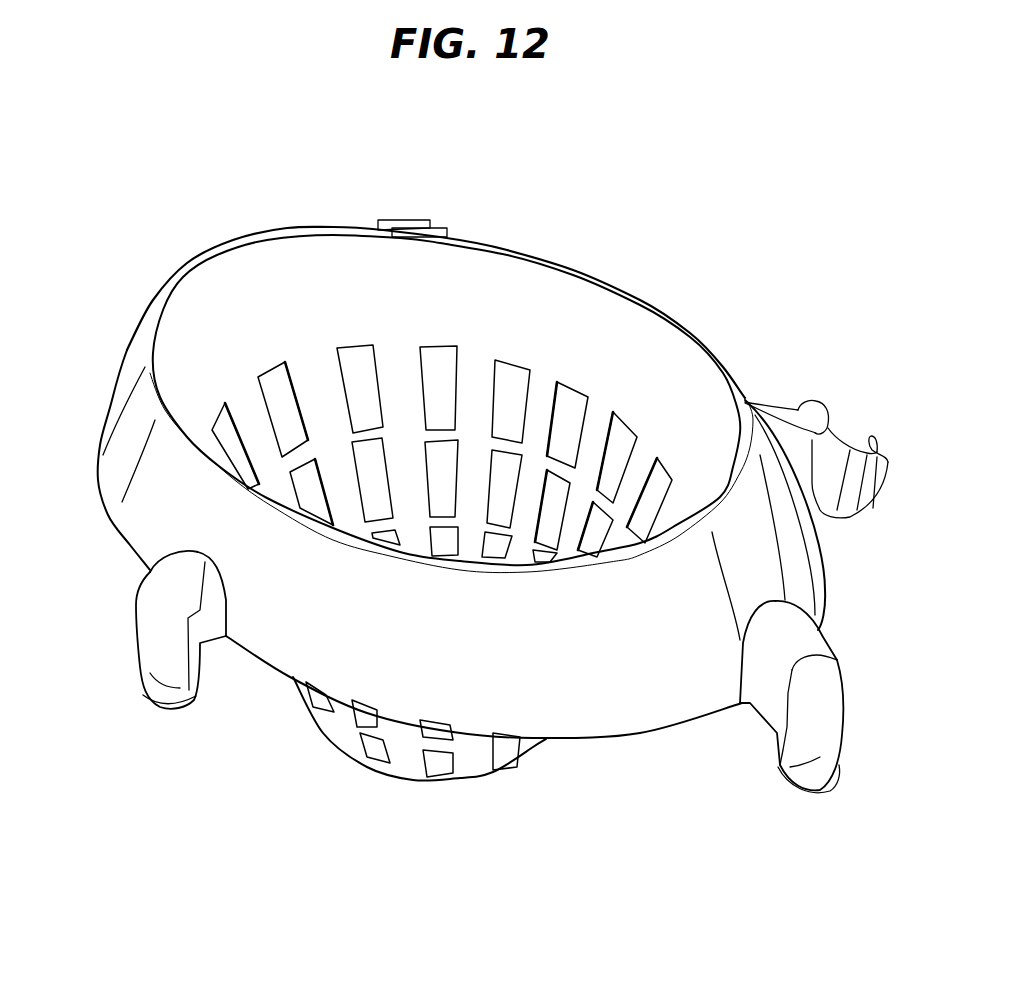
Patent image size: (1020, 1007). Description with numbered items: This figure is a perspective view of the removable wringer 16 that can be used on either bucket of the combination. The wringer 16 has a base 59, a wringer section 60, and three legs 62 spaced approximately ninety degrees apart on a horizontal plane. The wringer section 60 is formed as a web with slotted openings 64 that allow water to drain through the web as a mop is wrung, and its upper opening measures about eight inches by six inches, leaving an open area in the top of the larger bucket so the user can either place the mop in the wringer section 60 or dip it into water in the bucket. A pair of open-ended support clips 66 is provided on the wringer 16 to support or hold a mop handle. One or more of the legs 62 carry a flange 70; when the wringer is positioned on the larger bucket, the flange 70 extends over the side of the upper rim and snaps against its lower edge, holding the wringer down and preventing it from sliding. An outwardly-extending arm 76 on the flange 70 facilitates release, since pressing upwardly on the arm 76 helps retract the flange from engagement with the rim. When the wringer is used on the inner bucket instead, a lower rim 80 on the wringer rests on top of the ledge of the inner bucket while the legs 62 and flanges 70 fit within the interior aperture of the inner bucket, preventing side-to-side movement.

The removable wringer 16 is at (108, 331).
The base 59 is at (147, 462).
The wringer section 60 is at (350, 740).
The legs 62 is at (158, 570).
The slotted openings 64 is at (436, 771).
The open-ended support clips 66 is at (394, 216).
The flange 70 is at (138, 632).
The outwardly-extending arm 76 is at (170, 695).
The lower rim 80 is at (620, 738).